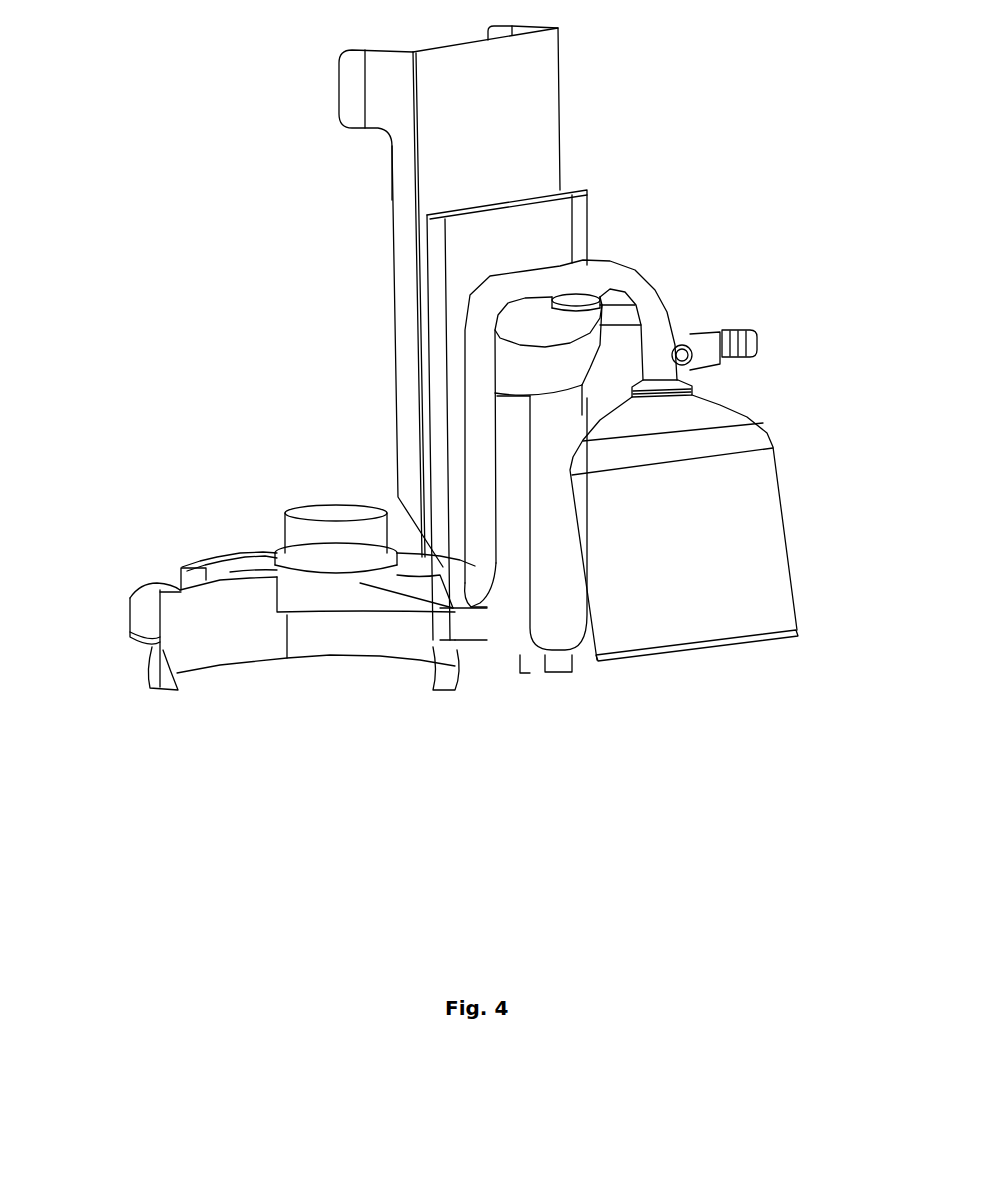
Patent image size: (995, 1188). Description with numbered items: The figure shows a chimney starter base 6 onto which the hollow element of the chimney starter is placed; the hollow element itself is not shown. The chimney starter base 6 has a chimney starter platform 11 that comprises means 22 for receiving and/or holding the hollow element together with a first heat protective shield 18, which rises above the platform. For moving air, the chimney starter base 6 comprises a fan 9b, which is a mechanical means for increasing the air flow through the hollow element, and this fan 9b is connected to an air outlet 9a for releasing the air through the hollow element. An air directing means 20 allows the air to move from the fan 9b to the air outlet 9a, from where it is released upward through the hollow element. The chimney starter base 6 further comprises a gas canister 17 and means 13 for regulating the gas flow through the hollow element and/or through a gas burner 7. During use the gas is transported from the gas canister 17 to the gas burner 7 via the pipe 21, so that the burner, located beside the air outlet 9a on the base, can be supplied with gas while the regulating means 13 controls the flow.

The means for receiving and/or holding the hollow element 22 is at (325, 77).
The first heat protective shield 18 is at (508, 85).
The pipe 21 is at (558, 272).
The fan 9b is at (562, 297).
The means for regulating the gas flow 13 is at (757, 342).
The air outlet 9a is at (315, 508).
The gas burner 7 is at (262, 543).
The chimney starter platform 11 is at (153, 576).
The gas canister 17 is at (745, 517).
The chimney starter base 6 is at (125, 665).
The air directing means 20 is at (540, 637).